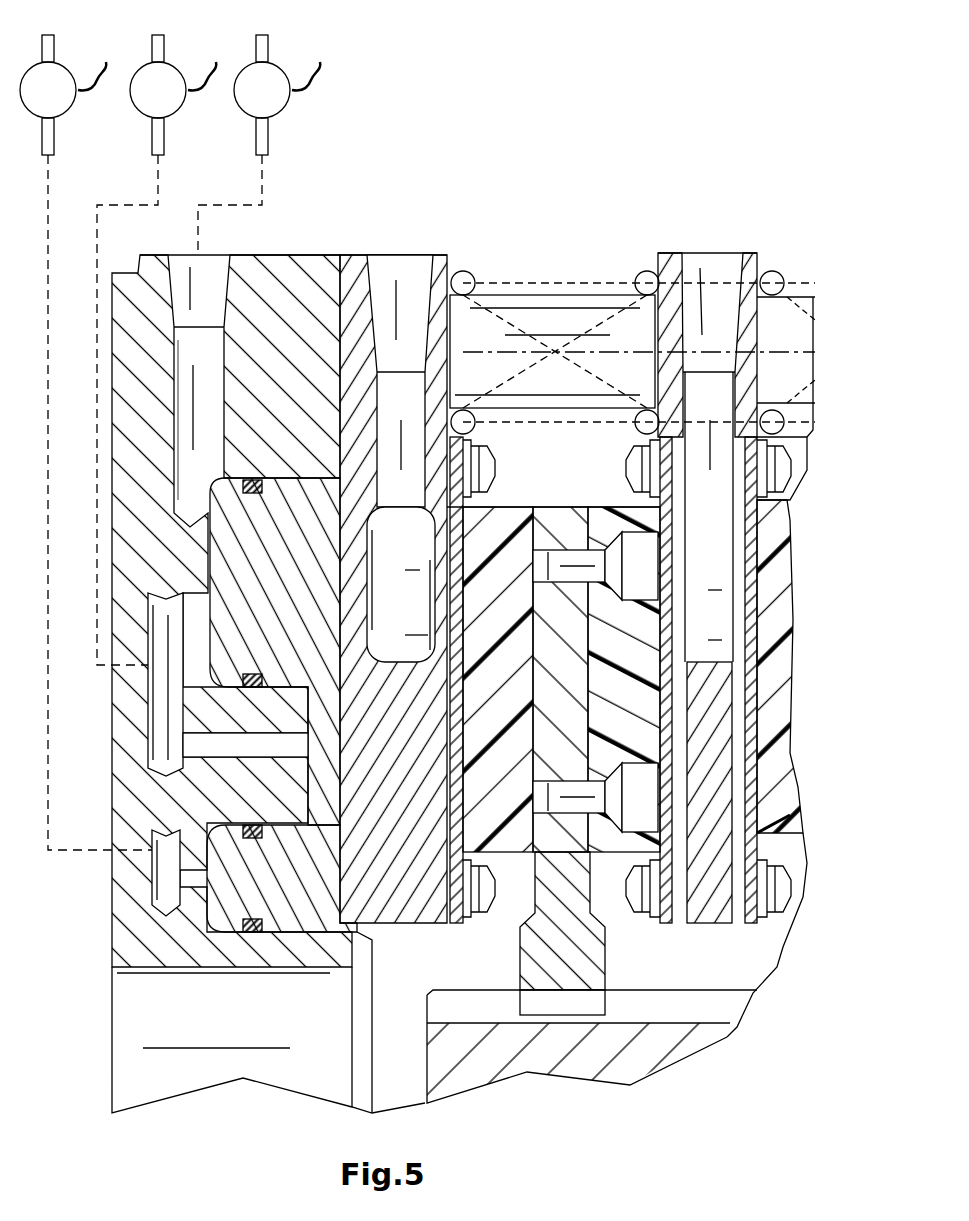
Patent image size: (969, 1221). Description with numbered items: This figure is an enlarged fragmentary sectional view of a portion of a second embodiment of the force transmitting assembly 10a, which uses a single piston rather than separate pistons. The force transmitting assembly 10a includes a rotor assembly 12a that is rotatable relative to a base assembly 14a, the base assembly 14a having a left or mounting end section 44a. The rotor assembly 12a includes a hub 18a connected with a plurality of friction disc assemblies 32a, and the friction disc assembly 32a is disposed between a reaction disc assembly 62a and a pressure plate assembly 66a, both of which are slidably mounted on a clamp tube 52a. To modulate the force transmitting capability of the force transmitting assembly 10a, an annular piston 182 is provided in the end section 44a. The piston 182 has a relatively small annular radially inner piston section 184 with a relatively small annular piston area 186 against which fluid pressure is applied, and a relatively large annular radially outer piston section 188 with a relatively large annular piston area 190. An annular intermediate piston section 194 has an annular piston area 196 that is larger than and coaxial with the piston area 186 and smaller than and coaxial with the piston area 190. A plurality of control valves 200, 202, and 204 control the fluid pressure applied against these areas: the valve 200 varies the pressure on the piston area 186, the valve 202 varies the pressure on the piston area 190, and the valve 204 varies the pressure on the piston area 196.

The control valve 200 is at (64, 72).
The control valve 204 is at (173, 72).
The control valve 202 is at (276, 72).
The mounting end section 44a is at (311, 252).
The pressure plate assembly 66a is at (449, 251).
The clamp tube 52a is at (558, 317).
The friction disc assembly 32a is at (557, 505).
The force transmitting assembly 10a is at (688, 205).
The reaction disc assembly 62a is at (757, 252).
The rotor assembly 12a is at (707, 1050).
The hub 18a is at (627, 1062).
The base assembly 14a is at (193, 1098).
The radially inner piston section 184 is at (225, 903).
The radially outer piston section 188 is at (237, 557).
The piston area 190 is at (240, 552).
The annular piston 182 is at (207, 687).
The piston area 196 is at (300, 745).
The intermediate piston section 194 is at (323, 780).
The piston area 186 is at (207, 877).